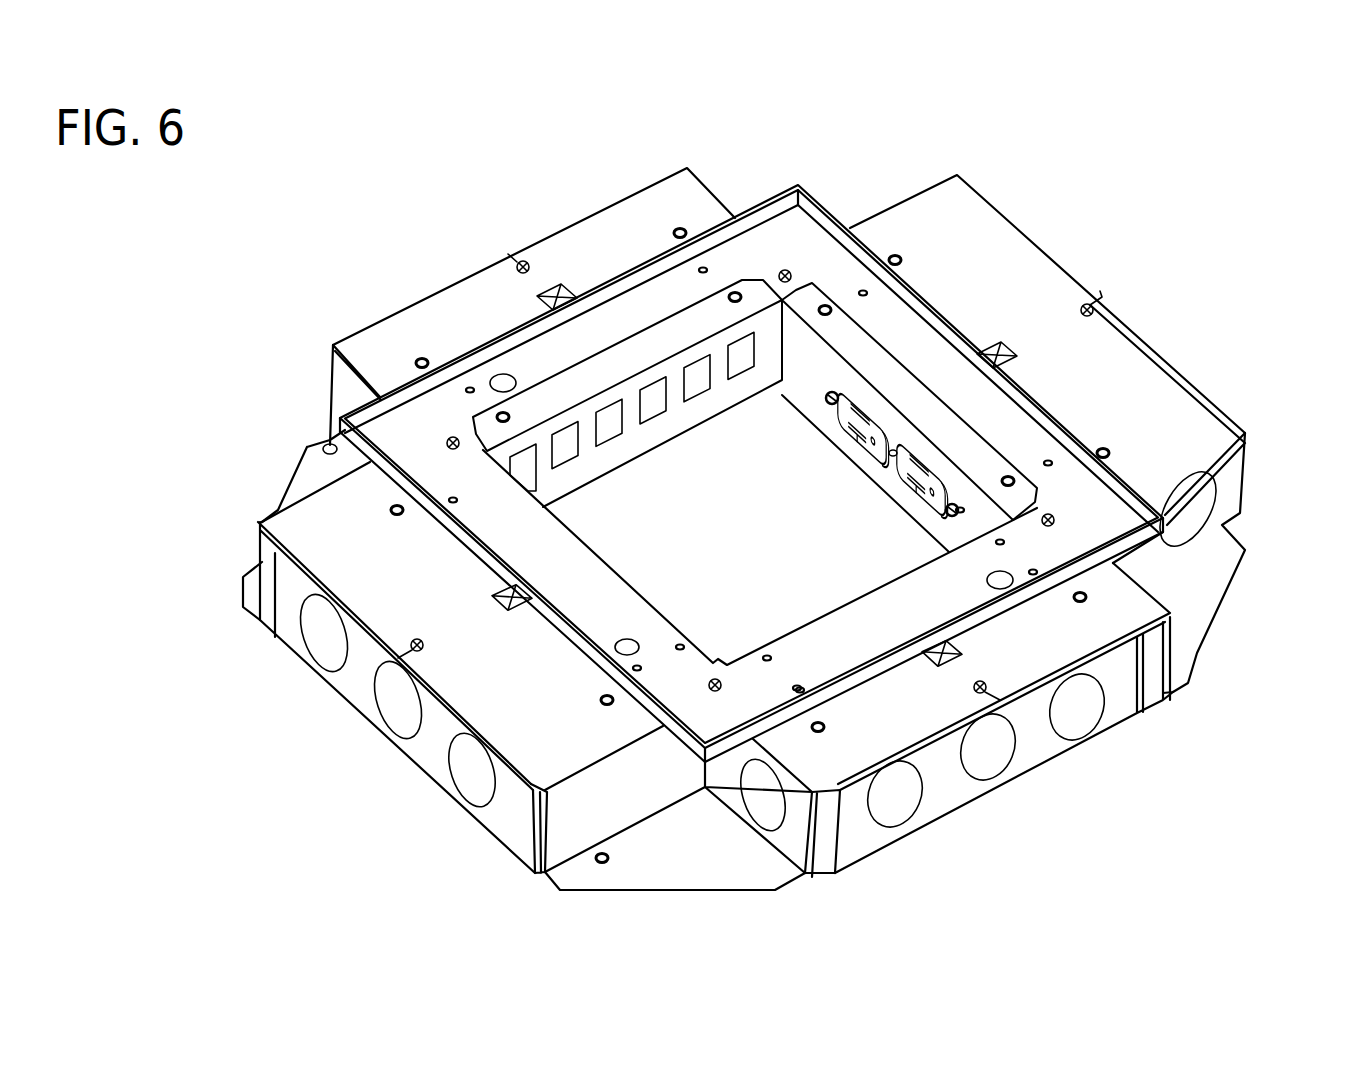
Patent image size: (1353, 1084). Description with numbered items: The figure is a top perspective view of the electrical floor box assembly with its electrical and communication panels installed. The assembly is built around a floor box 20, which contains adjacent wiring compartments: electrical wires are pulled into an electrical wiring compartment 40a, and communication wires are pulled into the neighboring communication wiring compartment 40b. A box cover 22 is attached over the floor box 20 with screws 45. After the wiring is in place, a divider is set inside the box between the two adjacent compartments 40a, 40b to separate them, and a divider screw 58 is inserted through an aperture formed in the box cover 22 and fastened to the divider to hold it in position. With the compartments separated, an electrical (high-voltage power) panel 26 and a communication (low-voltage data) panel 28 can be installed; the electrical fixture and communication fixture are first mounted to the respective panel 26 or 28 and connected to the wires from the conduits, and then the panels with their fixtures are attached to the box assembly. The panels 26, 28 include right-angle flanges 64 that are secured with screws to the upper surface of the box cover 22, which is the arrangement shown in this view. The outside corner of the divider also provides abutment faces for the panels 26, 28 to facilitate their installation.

The floor box 20 is at (950, 788).
The box cover 22 is at (1050, 650).
The electrical panel 26 is at (890, 412).
The communication panel 28 is at (665, 378).
The electrical wiring compartment 40a is at (1157, 383).
The communication wiring compartment 40b is at (387, 333).
The screws 45 is at (1075, 310).
The divider screw 58 is at (785, 273).
The right-angle flanges 64 is at (547, 393).